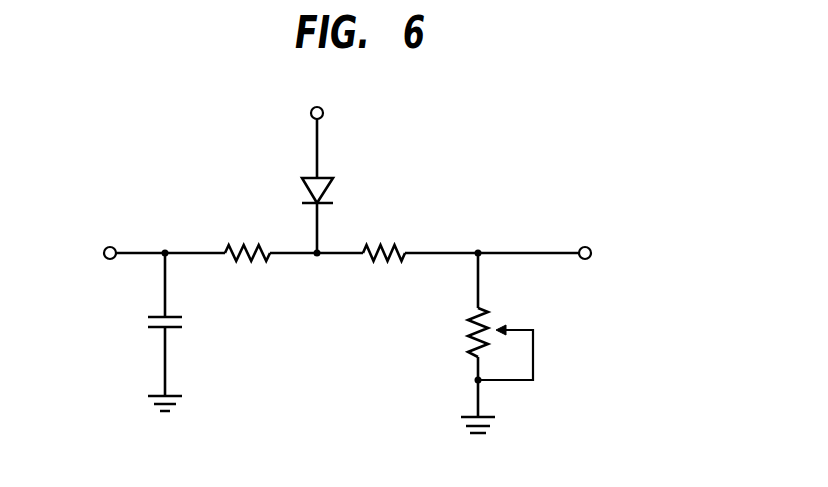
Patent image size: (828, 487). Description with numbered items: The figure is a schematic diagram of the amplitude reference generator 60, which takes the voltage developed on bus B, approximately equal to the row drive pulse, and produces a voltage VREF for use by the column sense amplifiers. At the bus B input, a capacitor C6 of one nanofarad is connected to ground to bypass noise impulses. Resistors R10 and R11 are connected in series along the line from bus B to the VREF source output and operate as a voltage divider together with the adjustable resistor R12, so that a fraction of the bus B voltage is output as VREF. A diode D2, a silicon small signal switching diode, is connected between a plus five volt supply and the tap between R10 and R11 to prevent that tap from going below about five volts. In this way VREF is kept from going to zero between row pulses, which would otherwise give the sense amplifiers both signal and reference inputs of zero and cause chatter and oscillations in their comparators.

The amplitude reference generator 60 is at (203, 212).
The resistor R10 is at (247, 252).
The resistor R11 is at (384, 252).
The adjustable resistor R12 is at (579, 344).
The capacitor C6 is at (185, 313).
The diode D2 is at (331, 193).